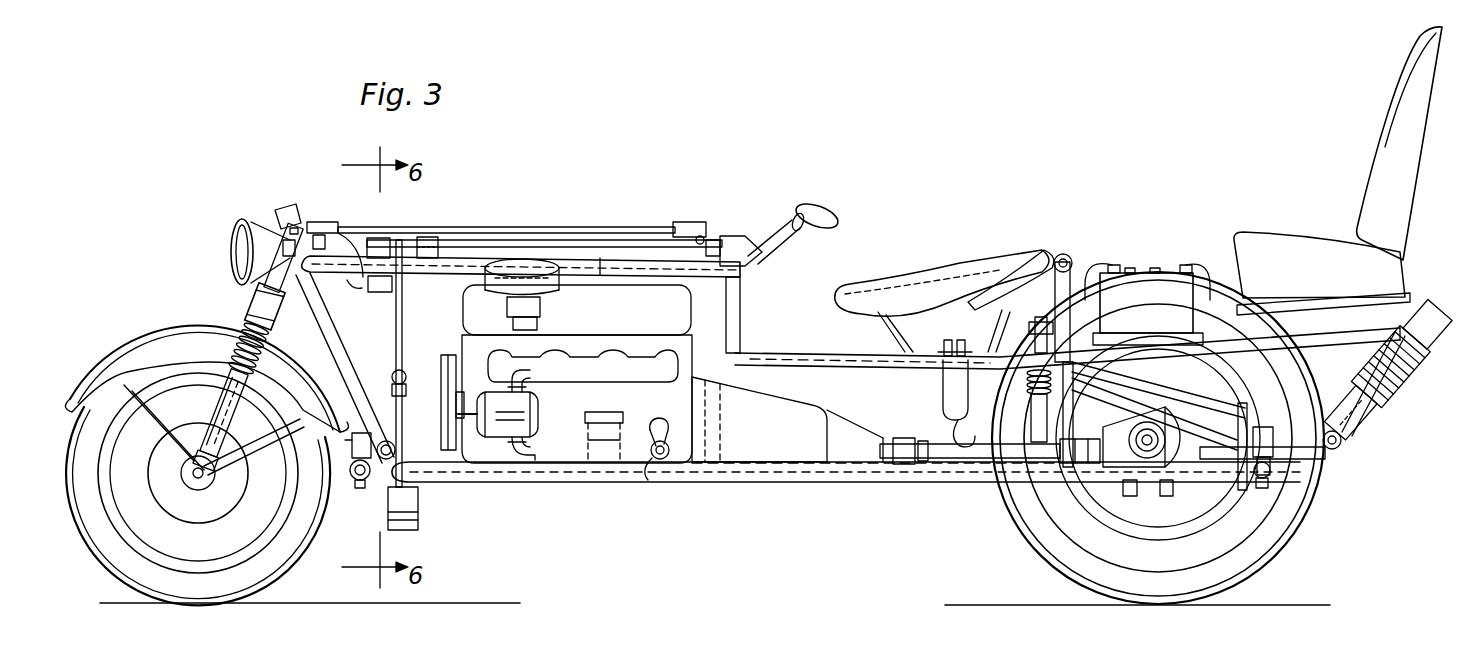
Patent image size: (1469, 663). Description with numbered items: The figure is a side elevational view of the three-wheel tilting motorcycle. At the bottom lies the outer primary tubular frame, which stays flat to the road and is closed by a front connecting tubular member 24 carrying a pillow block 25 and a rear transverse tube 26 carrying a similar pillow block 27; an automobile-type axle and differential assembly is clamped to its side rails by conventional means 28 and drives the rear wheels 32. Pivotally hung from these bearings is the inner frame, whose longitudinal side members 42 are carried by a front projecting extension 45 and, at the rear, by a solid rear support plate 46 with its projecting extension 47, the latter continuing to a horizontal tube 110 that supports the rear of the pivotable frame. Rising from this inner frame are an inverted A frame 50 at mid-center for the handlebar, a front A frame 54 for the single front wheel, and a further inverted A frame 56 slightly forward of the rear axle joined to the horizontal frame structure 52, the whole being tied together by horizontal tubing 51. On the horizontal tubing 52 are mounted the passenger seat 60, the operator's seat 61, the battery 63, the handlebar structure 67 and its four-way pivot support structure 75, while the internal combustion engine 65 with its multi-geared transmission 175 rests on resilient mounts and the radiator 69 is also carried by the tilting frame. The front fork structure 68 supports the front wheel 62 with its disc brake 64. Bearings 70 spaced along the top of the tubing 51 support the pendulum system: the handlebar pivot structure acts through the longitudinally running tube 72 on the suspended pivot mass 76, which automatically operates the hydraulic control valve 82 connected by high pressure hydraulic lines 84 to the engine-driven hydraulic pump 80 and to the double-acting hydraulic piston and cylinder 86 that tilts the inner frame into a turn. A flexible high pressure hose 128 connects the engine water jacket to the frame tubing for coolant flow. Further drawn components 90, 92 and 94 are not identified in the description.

The connecting tubular member 24 is at (355, 488).
The pillow block 25 is at (340, 420).
The connecting tubular member 26 is at (1275, 484).
The pillow block 27 is at (1260, 423).
The clamping means 28 is at (1145, 484).
The rear wheels 32 is at (1092, 563).
The side members 42 is at (783, 482).
The projecting extension 45 is at (352, 447).
The rear support plate 46 is at (1246, 412).
The projecting extension 47 is at (1268, 432).
The inverted A frame 50 is at (742, 300).
The horizontal tubing 51 is at (600, 262).
The horizontal frame structure 52 is at (828, 354).
The A frame 54 is at (333, 335).
The inverted A frame 56 is at (1072, 264).
The passenger seats 60 is at (1282, 283).
The operator's seat 61 is at (890, 300).
The front wheel 62 is at (198, 489).
The battery 63 is at (1167, 322).
The disc brake 64 is at (228, 470).
The internal combustion engine 65 is at (655, 326).
The handlebar structure 67 is at (782, 216).
The front fork structure 68 is at (256, 313).
The radiator 69 is at (1400, 385).
The bearings 70 is at (430, 238).
The longitudinally running tube 72 is at (515, 240).
The four-way pivot structure 75 is at (745, 252).
The pivot mass 76 is at (418, 512).
The hydraulic pump 80 is at (538, 414).
The hydraulic control valve 82 is at (390, 240).
The high pressure hydraulic lines 84 is at (935, 431).
The hydraulic piston and cylinder 86 is at (940, 395).
The upper handlebar 90 is at (572, 227).
The lamp and clamp 92 is at (322, 222).
The control cable 94 is at (341, 235).
The horizontal tube 110 is at (1340, 450).
The flexible high pressure hose 128 is at (655, 472).
The transmission 175 is at (755, 436).